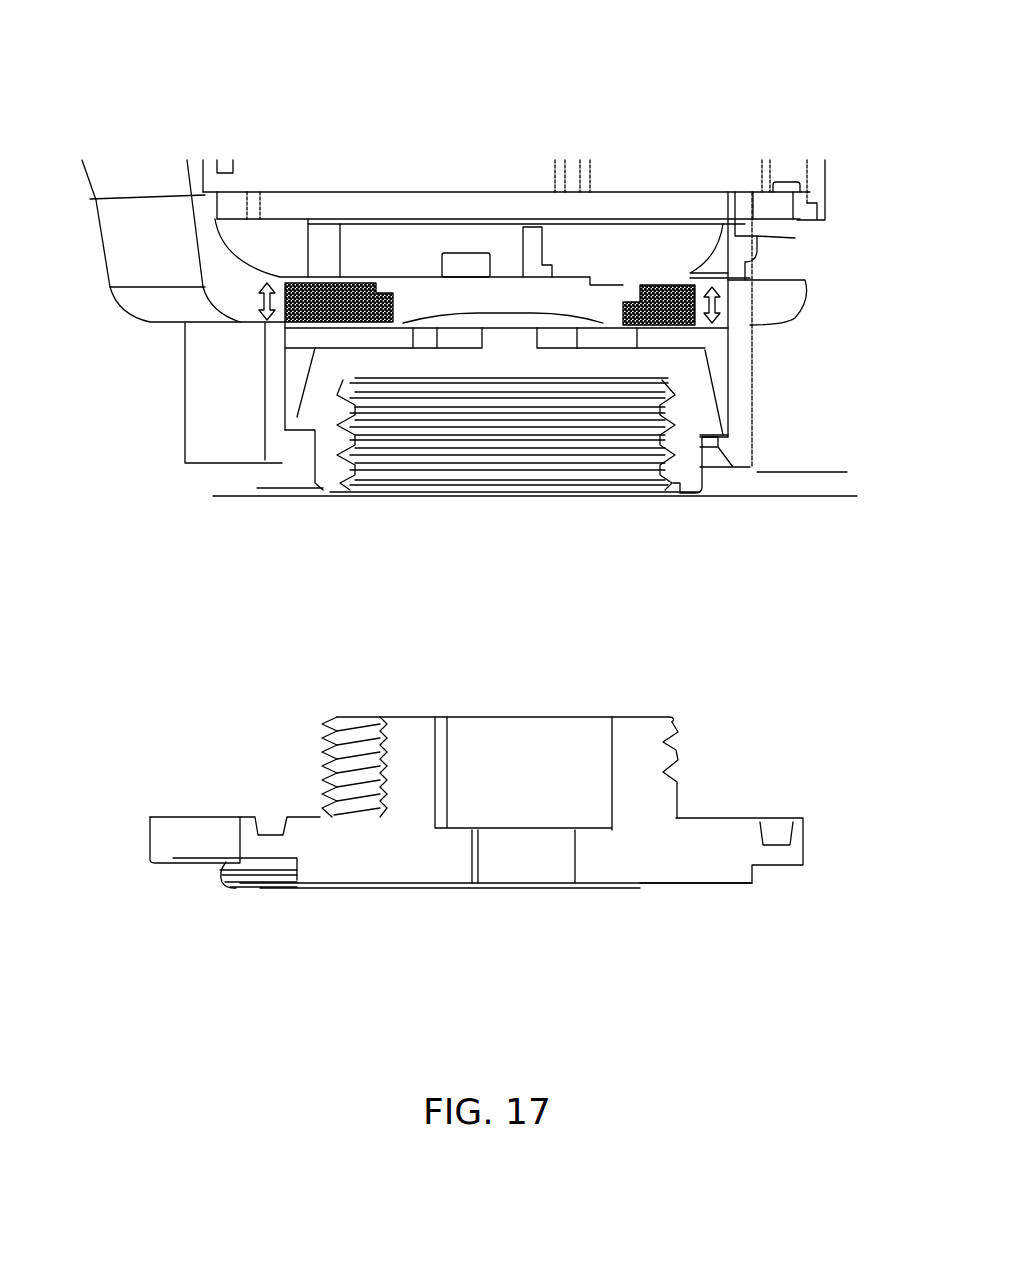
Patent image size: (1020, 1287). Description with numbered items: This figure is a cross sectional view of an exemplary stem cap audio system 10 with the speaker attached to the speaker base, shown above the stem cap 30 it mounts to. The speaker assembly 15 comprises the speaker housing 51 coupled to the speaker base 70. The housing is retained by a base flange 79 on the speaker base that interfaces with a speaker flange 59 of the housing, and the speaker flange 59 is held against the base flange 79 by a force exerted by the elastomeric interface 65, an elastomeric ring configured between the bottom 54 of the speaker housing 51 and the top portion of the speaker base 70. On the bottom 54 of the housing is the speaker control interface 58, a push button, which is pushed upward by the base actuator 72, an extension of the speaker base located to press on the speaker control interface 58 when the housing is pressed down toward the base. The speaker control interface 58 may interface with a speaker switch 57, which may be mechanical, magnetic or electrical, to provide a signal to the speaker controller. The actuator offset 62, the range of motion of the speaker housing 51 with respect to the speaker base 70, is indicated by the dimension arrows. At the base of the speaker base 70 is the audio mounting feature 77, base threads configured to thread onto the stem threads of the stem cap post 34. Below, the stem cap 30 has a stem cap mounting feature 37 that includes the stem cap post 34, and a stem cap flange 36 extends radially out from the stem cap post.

The stem cap audio system 10 is at (255, 111).
The speaker assembly 15 is at (372, 205).
The speaker housing 51 is at (172, 243).
The bottom 54 is at (723, 303).
The speaker switch 57 is at (532, 247).
The speaker control interface 58 is at (507, 275).
The speaker flange 59 is at (283, 443).
The actuator offset 62 is at (843, 548).
The elastomeric interface 65 is at (637, 297).
The speaker base 70 is at (340, 385).
The base actuator 72 is at (455, 337).
The audio mounting feature 77 is at (620, 432).
The base flange 79 is at (300, 417).
The stem cap 30 is at (393, 838).
The stem cap post 34 is at (640, 742).
The stem cap flange 36 is at (733, 873).
The stem cap mounting feature 37 is at (325, 760).